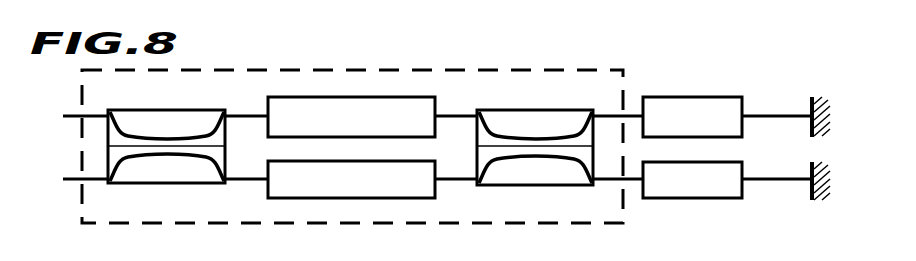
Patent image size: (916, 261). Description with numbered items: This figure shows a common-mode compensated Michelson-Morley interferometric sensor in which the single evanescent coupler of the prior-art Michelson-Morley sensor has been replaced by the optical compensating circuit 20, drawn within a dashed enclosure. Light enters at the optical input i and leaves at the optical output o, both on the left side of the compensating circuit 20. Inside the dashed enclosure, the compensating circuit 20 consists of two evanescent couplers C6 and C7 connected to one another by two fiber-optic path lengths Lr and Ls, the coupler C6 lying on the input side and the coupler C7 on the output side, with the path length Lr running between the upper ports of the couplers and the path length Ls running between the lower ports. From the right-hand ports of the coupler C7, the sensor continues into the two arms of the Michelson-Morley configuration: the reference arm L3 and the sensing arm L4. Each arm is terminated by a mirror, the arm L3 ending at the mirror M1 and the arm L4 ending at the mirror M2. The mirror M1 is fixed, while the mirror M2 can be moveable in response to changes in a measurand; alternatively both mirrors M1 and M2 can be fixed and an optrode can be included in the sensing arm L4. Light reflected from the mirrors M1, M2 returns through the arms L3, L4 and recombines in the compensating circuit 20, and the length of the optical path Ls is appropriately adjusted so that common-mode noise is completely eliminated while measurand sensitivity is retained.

The optical compensating circuit 20 is at (622, 76).
The evanescent coupler C6 is at (176, 185).
The evanescent coupler C7 is at (543, 186).
The fiber-optic path length Lr is at (351, 117).
The fiber-optic path length Ls is at (351, 179).
The reference arm L3 is at (692, 117).
The sensing arm L4 is at (692, 180).
The mirror M1 is at (806, 117).
The mirror M2 is at (806, 181).
The optical input i is at (79, 107).
The optical output o is at (77, 178).